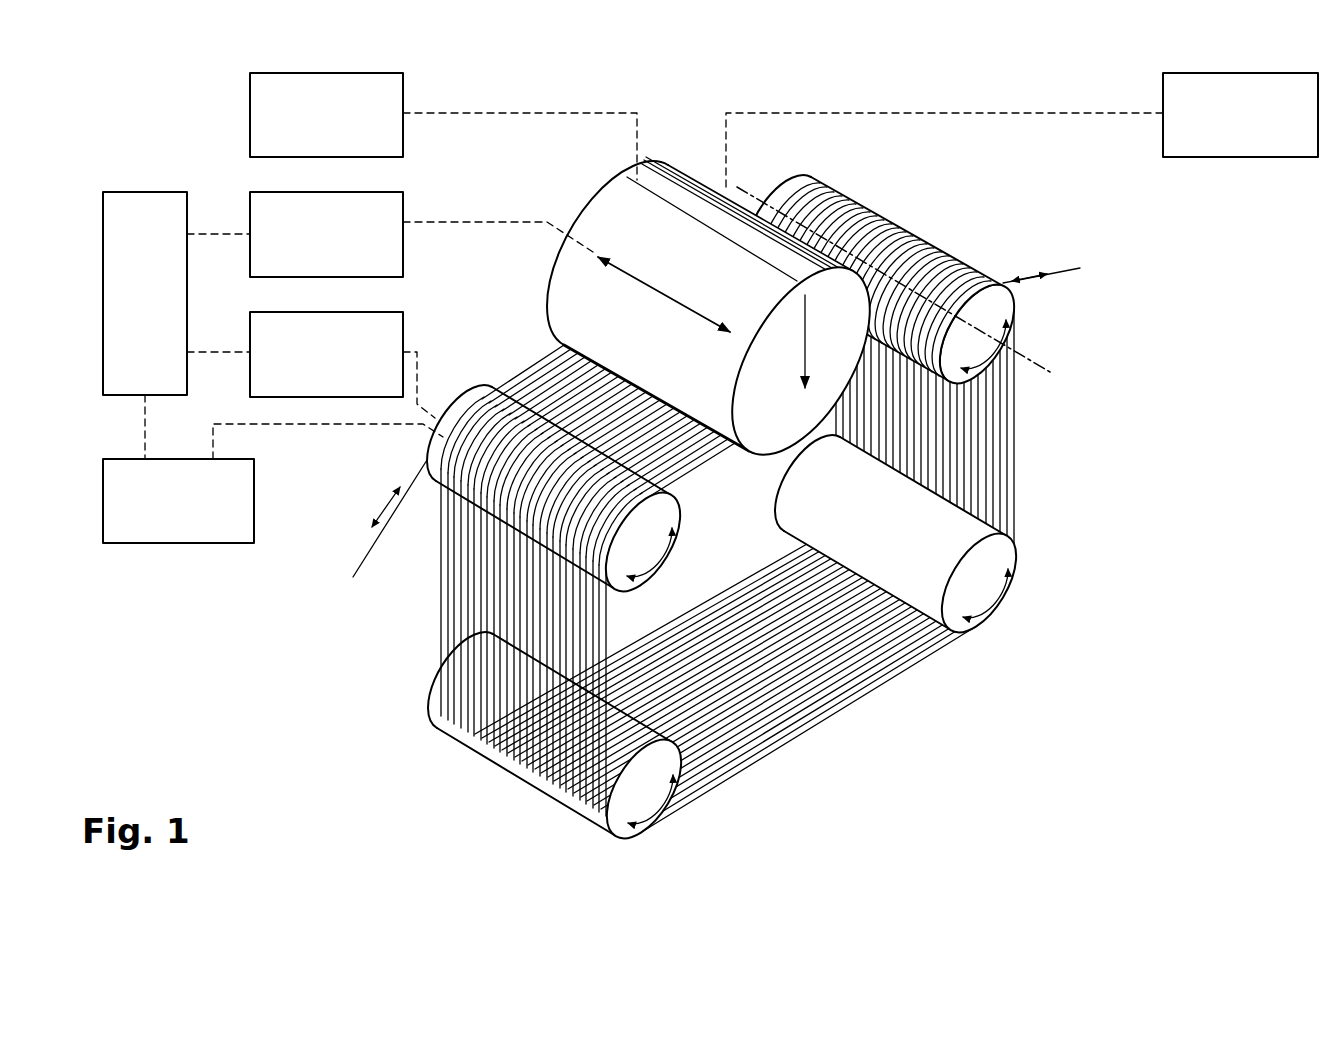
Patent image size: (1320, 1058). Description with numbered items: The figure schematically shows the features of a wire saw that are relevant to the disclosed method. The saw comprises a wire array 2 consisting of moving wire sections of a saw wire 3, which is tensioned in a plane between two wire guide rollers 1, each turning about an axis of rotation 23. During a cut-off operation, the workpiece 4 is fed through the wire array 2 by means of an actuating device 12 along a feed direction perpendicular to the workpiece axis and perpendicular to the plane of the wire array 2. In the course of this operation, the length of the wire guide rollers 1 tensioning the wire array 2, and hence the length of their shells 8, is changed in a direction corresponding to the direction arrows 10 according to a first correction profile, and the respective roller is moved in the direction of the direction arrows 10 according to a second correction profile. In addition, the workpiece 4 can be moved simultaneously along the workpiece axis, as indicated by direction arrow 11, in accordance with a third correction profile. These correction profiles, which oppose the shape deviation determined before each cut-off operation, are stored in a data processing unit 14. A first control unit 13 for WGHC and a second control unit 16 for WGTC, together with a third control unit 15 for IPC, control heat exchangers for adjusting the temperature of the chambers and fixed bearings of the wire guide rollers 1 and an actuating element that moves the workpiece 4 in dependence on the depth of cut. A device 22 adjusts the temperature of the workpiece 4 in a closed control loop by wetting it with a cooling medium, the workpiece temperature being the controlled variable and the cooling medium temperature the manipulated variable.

The wire guide roller 1 is at (1003, 316).
The wire array 2 is at (517, 365).
The saw wire 3 is at (413, 473).
The workpiece 4 is at (687, 170).
The shell 8 is at (795, 188).
The direction arrow 10 is at (893, 222).
The direction arrow 11 is at (640, 283).
The actuating device 12 is at (405, 93).
The control unit for WGHC 13 is at (165, 543).
The data processing unit 14 is at (143, 192).
The control unit for IPC 15 is at (405, 210).
The control unit for WGTC 16 is at (405, 332).
The device for adjusting the temperature of the workpiece 22 is at (1225, 157).
The axis of rotation 23 is at (1050, 357).